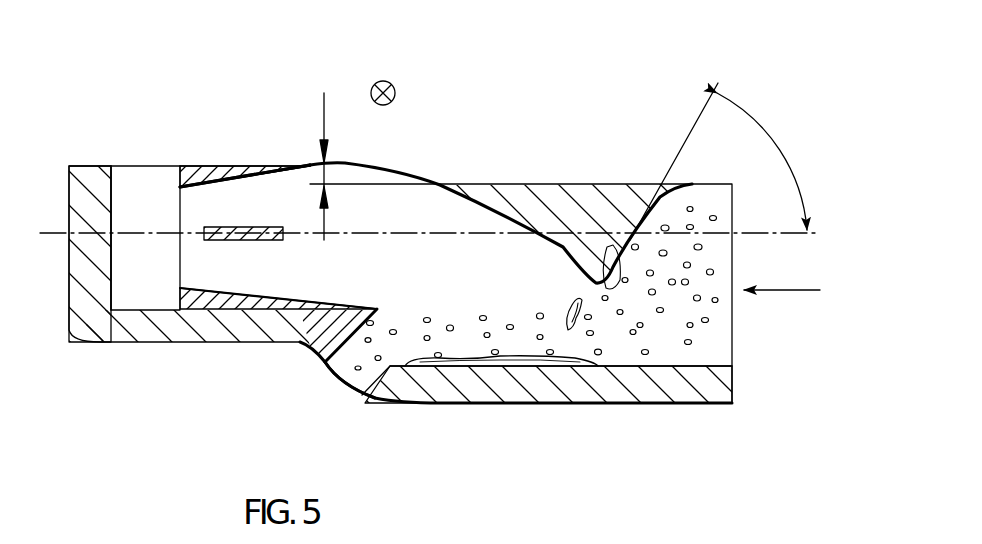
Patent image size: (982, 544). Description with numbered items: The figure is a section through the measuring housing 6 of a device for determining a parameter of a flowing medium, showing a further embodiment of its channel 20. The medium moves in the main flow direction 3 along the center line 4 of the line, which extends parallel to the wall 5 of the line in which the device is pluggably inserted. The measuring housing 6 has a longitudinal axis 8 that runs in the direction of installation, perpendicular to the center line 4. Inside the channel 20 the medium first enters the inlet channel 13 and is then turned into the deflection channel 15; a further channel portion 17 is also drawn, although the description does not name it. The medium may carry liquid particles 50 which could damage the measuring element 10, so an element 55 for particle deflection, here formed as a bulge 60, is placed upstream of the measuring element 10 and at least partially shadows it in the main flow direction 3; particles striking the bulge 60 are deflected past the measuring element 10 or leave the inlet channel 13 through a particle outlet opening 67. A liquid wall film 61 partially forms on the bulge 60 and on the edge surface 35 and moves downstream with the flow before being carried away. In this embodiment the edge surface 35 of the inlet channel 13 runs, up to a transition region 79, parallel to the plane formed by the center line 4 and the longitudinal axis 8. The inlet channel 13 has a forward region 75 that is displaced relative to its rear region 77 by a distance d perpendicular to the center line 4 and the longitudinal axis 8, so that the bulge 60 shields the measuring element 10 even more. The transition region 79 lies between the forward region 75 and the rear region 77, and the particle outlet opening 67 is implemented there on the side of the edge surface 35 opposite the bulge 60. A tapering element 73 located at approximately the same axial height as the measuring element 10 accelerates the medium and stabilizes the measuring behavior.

The main flow direction 3 is at (812, 292).
The center line 4 is at (385, 235).
The wall 5 is at (458, 395).
The measuring housing 6 is at (219, 365).
The longitudinal axis 8 is at (394, 80).
The measuring element 10 is at (237, 240).
The inlet channel 13 is at (540, 296).
The deflection channel 15 is at (152, 190).
The channel 17 is at (243, 203).
The channel 20 is at (303, 344).
The edge surface 35 is at (100, 170).
The liquid particles 50 is at (690, 345).
The element for particle deflection 55 is at (521, 258).
The bulge 60 is at (562, 213).
The liquid wall film 61 is at (533, 362).
The particle outlet opening 67 is at (370, 380).
The tapering element 73 is at (197, 167).
The forward region 75 is at (594, 148).
The rear region 77 is at (289, 103).
The transition region 79 is at (437, 183).
The distance d is at (320, 170).